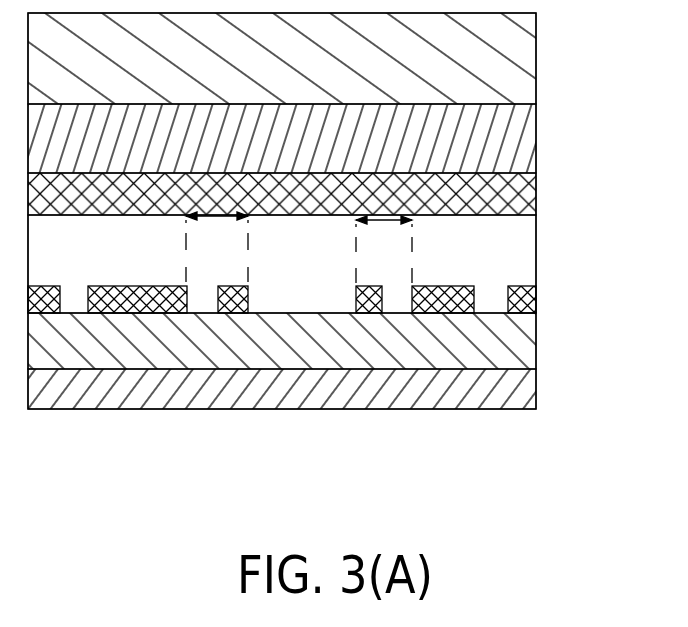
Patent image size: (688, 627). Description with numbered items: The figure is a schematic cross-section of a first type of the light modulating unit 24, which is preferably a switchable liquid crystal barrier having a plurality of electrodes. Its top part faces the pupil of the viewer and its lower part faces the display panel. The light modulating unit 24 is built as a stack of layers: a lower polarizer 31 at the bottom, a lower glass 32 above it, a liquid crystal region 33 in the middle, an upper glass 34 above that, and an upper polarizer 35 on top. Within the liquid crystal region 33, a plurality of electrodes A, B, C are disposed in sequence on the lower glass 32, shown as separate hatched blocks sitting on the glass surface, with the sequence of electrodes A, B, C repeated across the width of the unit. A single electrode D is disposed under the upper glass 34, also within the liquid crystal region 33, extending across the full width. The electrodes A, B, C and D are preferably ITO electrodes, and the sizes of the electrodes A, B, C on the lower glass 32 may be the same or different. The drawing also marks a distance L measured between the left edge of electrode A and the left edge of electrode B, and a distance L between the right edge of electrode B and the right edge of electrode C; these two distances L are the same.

The light modulating unit 24 is at (342, 234).
The lower polarizer 31 is at (536, 385).
The lower glass 32 is at (536, 340).
The liquid crystal region 33 is at (536, 247).
The upper glass 34 is at (536, 135).
The upper polarizer 35 is at (536, 55).
The electrode D is at (536, 196).
The electrode A is at (48, 305).
The electrode B is at (133, 305).
The electrode C is at (232, 305).
The distance L is at (299, 249).